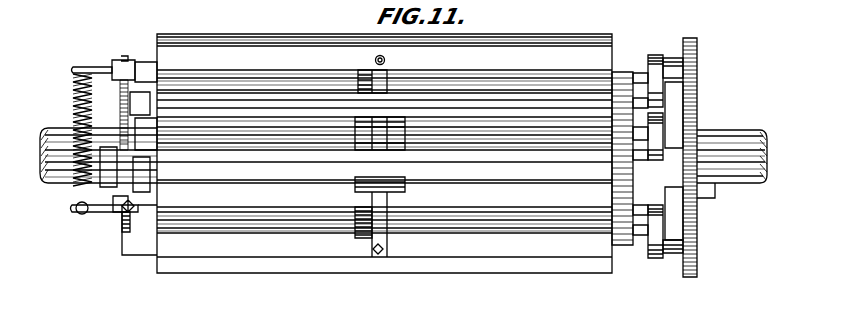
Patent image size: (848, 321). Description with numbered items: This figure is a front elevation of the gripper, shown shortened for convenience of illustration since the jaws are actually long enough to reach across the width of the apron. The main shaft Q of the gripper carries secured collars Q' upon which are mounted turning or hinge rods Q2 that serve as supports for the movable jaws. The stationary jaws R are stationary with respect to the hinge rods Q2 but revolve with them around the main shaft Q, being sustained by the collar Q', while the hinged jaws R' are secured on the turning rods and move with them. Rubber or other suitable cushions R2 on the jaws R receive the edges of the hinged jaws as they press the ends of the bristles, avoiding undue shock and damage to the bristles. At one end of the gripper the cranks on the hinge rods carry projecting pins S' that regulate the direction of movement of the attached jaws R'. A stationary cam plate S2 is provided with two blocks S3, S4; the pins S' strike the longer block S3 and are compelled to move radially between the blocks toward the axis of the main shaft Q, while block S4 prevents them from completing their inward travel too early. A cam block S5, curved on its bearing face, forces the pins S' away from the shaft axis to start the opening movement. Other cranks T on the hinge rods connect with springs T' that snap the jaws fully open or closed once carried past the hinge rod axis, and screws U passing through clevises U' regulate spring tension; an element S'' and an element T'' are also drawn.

The main shaft Q is at (732, 148).
The collar Q' is at (381, 238).
The hinge rod Q2 is at (580, 75).
The stationary jaw R is at (384, 159).
The hinged jaw R' is at (384, 148).
The cushion R2 is at (268, 45).
The projecting pin S' is at (637, 155).
The hub S'' is at (680, 39).
The cam plate S2 is at (698, 74).
The cam block S3 is at (673, 108).
The cam block S4 is at (675, 254).
The cam block S5 is at (676, 228).
The crank T is at (96, 134).
The spring T' is at (79, 121).
The rod T'' is at (92, 223).
The screw U is at (111, 250).
The clevis U' is at (107, 225).